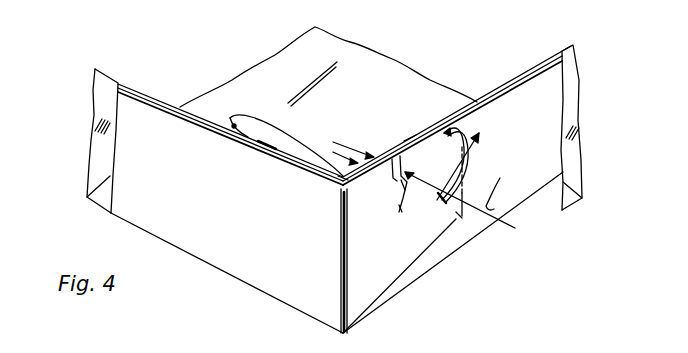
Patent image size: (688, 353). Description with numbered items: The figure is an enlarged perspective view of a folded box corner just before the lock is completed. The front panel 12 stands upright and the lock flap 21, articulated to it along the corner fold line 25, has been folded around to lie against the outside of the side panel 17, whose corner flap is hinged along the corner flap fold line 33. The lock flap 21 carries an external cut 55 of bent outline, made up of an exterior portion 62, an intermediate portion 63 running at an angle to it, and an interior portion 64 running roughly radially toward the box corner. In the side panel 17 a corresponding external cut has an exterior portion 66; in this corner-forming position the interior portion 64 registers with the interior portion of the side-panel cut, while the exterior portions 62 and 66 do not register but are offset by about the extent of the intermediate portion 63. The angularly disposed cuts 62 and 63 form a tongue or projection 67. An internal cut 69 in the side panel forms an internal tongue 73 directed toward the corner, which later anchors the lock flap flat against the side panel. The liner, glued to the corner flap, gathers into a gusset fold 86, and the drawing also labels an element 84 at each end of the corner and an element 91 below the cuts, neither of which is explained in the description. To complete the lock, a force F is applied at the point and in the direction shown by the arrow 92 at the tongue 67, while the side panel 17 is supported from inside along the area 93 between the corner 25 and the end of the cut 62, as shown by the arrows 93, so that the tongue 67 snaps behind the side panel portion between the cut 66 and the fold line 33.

The front panel 12 is at (228, 204).
The side panel 17 is at (532, 144).
The lock flap 21 is at (400, 251).
The corner fold line 25 is at (339, 250).
The corner flap fold line 33 is at (346, 176).
The external cut 55 is at (399, 212).
The exterior portion 62 is at (391, 169).
The intermediate portion 63 is at (398, 186).
The interior portion 64 is at (398, 210).
The exterior portion 66 is at (410, 142).
The tongue or projection 67 is at (400, 171).
The internal cut 69 is at (440, 198).
The internal tongue 73 is at (454, 183).
The end flaps 84 is at (100, 87).
The gusset fold 86 is at (231, 119).
The tear line 91 is at (454, 218).
The arrow 92 is at (506, 224).
The area 93 is at (333, 153).